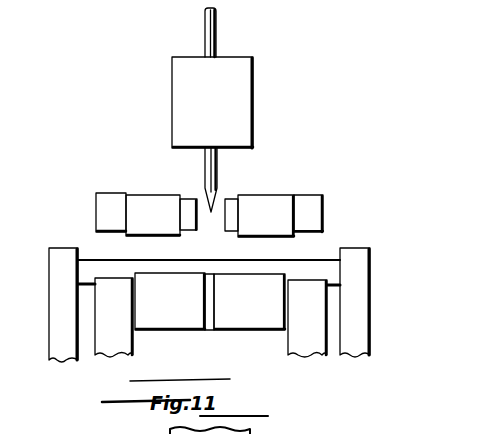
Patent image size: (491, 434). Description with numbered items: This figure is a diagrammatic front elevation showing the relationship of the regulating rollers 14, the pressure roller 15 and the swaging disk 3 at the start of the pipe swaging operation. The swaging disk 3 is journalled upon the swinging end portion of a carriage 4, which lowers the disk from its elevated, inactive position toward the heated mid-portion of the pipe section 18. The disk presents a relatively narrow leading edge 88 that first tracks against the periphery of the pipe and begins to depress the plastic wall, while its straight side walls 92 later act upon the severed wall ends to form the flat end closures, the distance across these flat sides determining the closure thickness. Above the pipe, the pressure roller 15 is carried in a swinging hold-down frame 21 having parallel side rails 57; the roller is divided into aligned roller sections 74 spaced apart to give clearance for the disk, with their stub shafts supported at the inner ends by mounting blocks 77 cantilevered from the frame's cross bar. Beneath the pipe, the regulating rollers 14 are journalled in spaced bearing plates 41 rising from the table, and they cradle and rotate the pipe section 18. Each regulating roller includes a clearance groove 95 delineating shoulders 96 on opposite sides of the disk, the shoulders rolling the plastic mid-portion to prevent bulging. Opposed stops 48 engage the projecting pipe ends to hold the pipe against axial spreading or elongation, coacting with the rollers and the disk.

The swaging disk 3 is at (222, 42).
The straight side walls of the disk 92 is at (205, 30).
The carriage 4 is at (259, 86).
The leading edge of disk 88 is at (211, 212).
The side rails 57 is at (96, 199).
The roller sections 74 is at (146, 206).
The mounting blocks 77 is at (228, 203).
The pressure roller 15 is at (295, 190).
The hold-down frame 21 is at (332, 198).
The pipe section 18 is at (326, 252).
The stops 48 is at (52, 290).
The bearing plates 41 is at (110, 342).
The regulating rollers 14 is at (178, 320).
The clearance groove 95 is at (213, 330).
The shoulders 96 is at (215, 297).